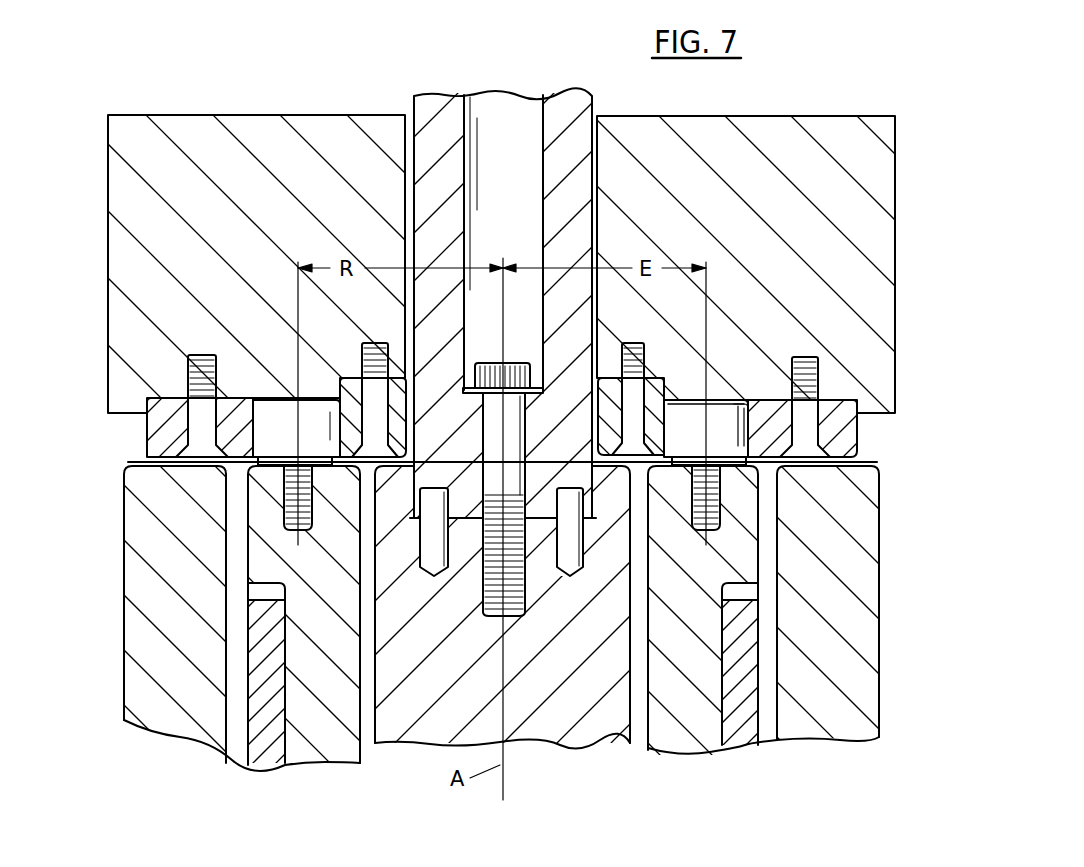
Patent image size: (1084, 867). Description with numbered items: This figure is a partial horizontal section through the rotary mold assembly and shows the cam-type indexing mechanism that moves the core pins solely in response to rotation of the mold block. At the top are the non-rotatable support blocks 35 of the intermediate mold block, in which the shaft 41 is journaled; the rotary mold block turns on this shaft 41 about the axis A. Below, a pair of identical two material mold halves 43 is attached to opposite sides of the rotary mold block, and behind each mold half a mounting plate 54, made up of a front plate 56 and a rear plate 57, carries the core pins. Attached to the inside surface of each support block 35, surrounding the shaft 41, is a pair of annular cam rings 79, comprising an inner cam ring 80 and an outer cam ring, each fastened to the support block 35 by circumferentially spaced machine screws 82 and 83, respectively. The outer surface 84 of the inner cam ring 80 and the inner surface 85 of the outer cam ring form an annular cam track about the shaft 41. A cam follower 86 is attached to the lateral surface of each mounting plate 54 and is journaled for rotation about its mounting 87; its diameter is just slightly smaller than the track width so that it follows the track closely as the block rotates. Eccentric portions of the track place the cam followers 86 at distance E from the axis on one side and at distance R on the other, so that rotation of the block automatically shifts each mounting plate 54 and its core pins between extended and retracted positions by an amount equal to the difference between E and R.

The support block 35 is at (233, 114).
The shaft 41 is at (570, 450).
The two material mold half 43 is at (125, 662).
The mounting plate 54 is at (305, 770).
The front plate 56 is at (267, 764).
The rear plate 57 is at (339, 757).
The annular cam ring 79 is at (650, 385).
The inner cam ring 80 is at (350, 382).
The machine screw 82 is at (632, 342).
The machine screw 83 is at (201, 354).
The outer surface of inner cam ring 84 is at (666, 414).
The inner surface of outer cam ring 85 is at (742, 404).
The cam follower 86 is at (286, 440).
The mounting 87 is at (150, 432).